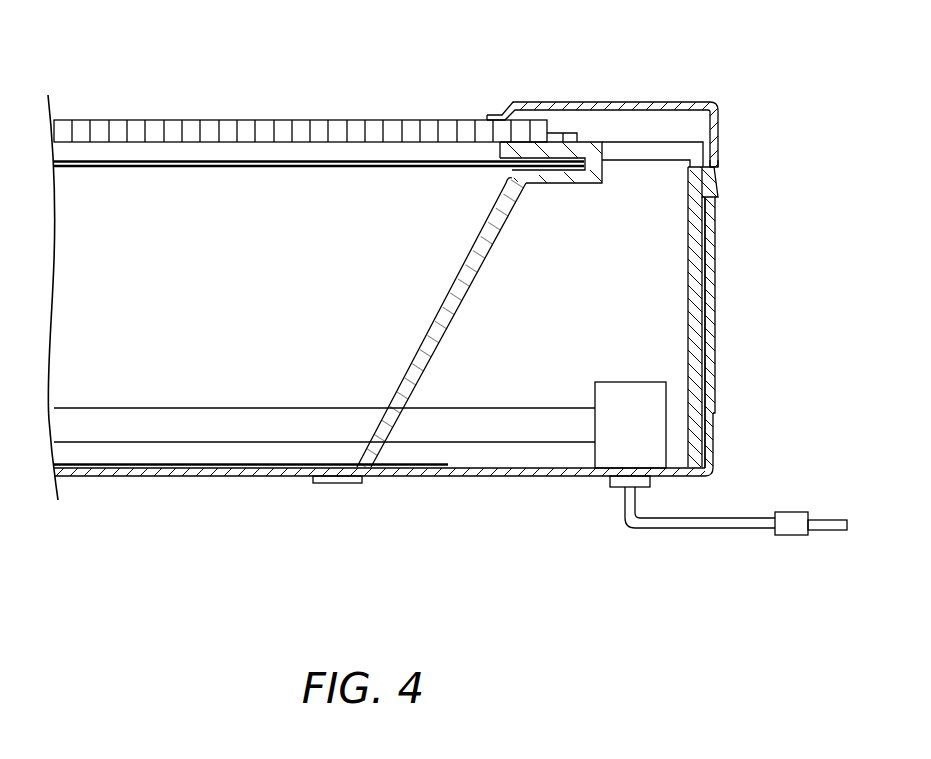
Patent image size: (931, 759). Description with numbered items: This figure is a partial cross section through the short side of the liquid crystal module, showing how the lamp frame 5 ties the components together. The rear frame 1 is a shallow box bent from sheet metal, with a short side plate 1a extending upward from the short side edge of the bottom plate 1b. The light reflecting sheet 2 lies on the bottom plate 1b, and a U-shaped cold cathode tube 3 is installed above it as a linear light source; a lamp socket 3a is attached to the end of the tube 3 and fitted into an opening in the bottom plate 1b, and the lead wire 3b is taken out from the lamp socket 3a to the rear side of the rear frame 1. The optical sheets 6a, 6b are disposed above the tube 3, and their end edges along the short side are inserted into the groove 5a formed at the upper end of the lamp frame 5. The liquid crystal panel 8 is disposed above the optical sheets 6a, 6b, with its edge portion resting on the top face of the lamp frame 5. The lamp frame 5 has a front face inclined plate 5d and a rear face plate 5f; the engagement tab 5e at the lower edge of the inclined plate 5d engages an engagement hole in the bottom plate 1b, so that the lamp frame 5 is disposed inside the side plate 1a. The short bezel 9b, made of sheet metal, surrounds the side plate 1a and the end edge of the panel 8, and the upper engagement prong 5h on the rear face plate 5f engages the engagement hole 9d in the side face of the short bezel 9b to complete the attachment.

The rear frame 1 is at (421, 369).
The short side plate 1a is at (712, 432).
The bottom plate 1b is at (383, 336).
The light reflecting sheet 2 is at (268, 463).
The U-shaped cold cathode tube 3 is at (450, 459).
The lamp socket 3a is at (620, 392).
The lead wire 3b is at (686, 530).
The lamp frame 5 is at (553, 346).
The groove 5a is at (513, 177).
The front face inclined plate 5d is at (430, 333).
The engagement tab 5e is at (340, 484).
The rear face plate 5f is at (707, 317).
The upper engagement prong 5h is at (718, 194).
The optical sheet 6a is at (262, 169).
The optical sheet 6b is at (331, 160).
The liquid crystal panel 8 is at (167, 120).
The short bezel 9b is at (640, 113).
The engagement hole 9d is at (716, 168).